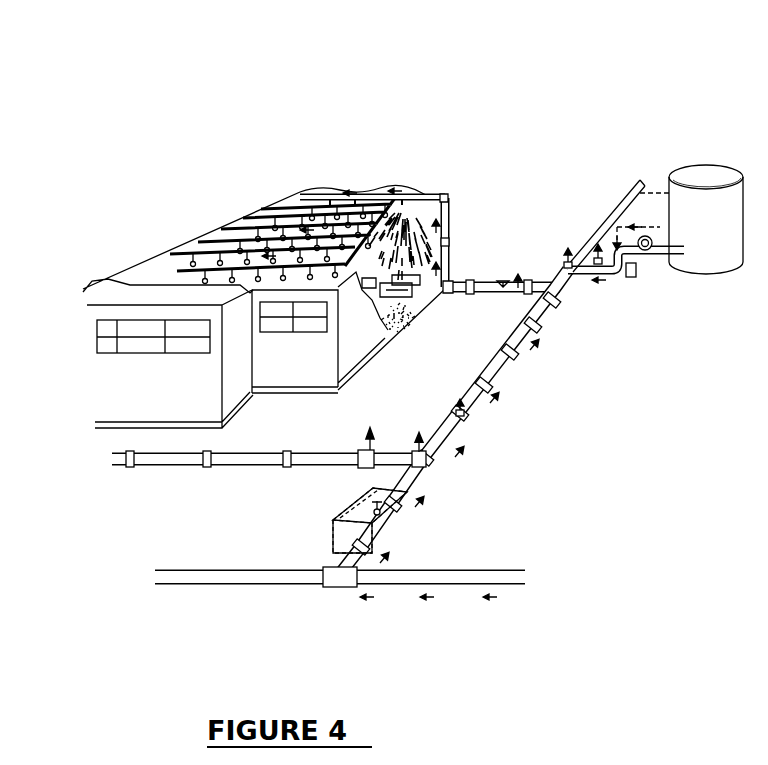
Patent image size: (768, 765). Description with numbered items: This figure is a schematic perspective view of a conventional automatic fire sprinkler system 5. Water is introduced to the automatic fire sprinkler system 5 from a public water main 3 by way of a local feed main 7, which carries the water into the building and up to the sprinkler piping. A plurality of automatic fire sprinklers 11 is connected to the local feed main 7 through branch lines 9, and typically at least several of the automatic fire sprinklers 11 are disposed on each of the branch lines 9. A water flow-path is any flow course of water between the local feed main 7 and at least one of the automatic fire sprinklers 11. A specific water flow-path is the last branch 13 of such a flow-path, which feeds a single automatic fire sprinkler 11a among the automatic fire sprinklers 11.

The public water main 3 is at (460, 585).
The automatic fire sprinkler system 5 is at (132, 172).
The local feed main 7 is at (439, 191).
The branch lines 9 is at (295, 196).
The automatic fire sprinklers 11 is at (198, 266).
The single automatic fire sprinkler 11a is at (338, 268).
The last branch 13 is at (326, 267).